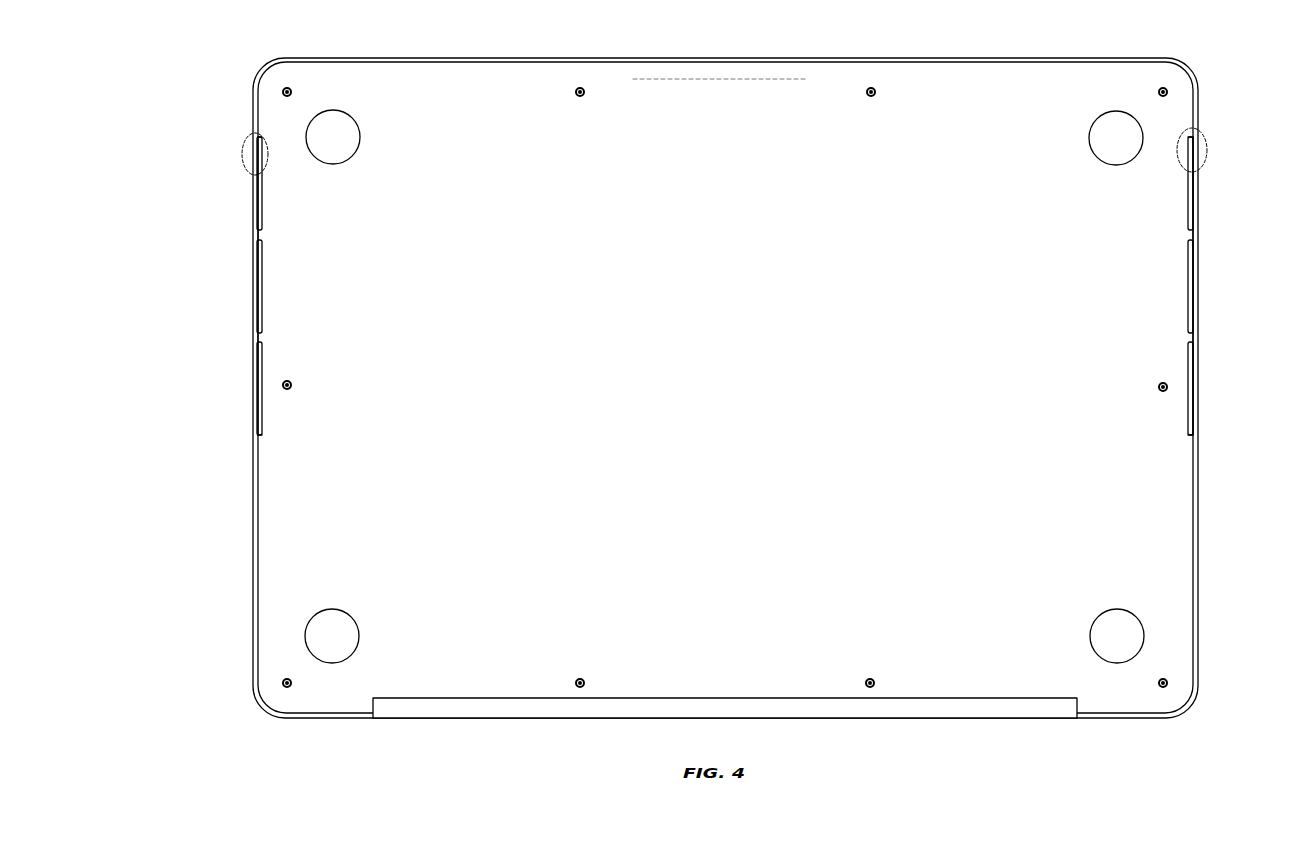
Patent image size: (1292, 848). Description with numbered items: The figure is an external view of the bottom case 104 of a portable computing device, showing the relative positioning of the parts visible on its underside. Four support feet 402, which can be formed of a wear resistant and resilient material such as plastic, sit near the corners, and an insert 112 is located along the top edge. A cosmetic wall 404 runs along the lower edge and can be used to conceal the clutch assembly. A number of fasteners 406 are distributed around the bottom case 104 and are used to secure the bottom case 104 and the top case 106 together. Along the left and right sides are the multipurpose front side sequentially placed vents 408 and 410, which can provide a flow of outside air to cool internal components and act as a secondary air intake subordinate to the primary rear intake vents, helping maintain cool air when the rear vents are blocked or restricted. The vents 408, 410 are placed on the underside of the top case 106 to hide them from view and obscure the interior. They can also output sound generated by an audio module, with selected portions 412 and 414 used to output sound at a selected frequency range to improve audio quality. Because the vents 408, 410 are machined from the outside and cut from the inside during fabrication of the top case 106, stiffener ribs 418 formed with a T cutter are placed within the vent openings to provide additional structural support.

The bottom case 104 is at (725, 387).
The top case 106 is at (1198, 517).
The insert 112 is at (713, 80).
The support feet 402 is at (724, 386).
The cosmetic wall 404 is at (860, 707).
The fasteners 406 is at (293, 92).
The vent 408 is at (253, 378).
The vent 410 is at (1192, 350).
The portion 412 is at (243, 160).
The portion 414 is at (1206, 148).
The stiffener ribs 418 is at (258, 135).